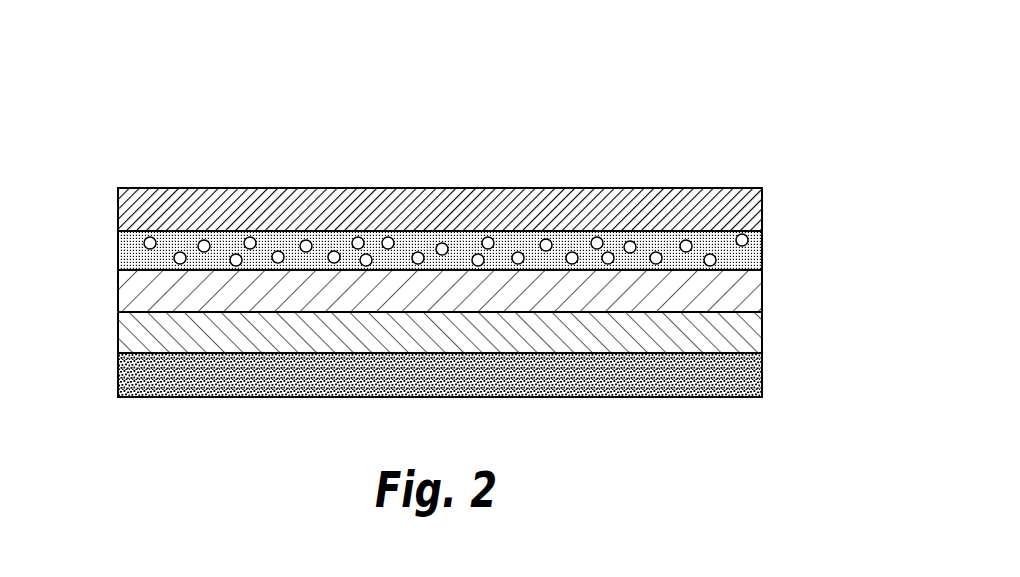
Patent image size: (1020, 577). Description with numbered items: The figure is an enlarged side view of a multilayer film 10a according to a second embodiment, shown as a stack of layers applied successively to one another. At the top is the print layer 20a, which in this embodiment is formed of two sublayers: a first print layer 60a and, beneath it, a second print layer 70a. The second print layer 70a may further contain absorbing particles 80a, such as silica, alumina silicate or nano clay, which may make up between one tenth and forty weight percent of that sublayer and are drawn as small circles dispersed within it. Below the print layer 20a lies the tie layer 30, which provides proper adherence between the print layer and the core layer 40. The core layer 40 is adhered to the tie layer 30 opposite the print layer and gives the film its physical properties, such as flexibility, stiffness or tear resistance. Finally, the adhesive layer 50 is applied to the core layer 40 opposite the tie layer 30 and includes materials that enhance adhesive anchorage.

The multilayer film 10a is at (613, 146).
The print layer 20a is at (114, 230).
The tie layer 30 is at (118, 295).
The core layer 40 is at (118, 337).
The adhesive layer 50 is at (118, 373).
The first print layer 60a is at (762, 213).
The second print layer 70a is at (762, 248).
The absorbing particles 80a is at (718, 261).